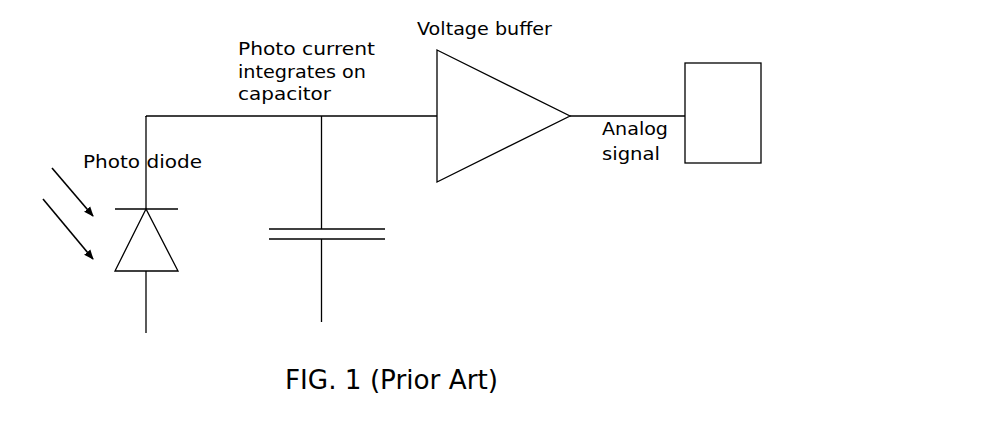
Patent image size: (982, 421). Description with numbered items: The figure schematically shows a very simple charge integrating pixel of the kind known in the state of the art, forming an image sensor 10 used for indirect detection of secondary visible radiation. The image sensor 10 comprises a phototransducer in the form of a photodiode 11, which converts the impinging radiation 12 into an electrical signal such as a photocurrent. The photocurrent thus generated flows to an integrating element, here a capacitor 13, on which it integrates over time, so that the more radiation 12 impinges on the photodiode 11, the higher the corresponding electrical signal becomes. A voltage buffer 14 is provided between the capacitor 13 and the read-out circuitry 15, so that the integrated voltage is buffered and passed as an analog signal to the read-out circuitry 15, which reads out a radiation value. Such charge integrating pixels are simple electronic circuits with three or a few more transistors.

The image sensor 10 is at (110, 57).
The photodiode 11 is at (140, 240).
The impinging radiation 12 is at (61, 213).
The capacitor 13 is at (339, 240).
The voltage buffer 14 is at (478, 90).
The read-out circuitry 15 is at (698, 152).